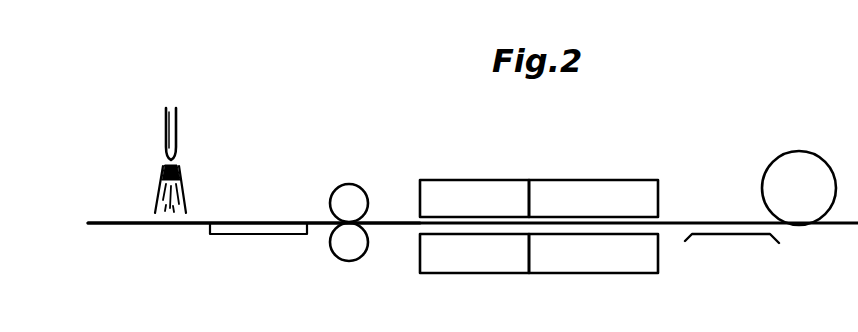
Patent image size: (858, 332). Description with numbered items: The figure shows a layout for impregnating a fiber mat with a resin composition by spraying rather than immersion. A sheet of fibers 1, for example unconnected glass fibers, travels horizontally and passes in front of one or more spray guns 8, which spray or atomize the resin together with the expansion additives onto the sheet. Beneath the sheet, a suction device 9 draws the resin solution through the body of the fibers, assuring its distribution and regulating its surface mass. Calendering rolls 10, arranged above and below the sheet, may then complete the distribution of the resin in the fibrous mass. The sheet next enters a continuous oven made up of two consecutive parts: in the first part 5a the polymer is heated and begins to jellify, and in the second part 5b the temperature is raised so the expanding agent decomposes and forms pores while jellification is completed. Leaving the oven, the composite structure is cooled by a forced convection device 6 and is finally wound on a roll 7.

The sheet of fibers 1 is at (204, 222).
The first part of the oven 5a is at (469, 238).
The second part of the drying chamber 5b is at (578, 238).
The forced convection device 6 is at (738, 234).
The roll 7 is at (816, 168).
The spray gun 8 is at (177, 131).
The suction device 9 is at (253, 230).
The calendering rolls 10 is at (372, 201).